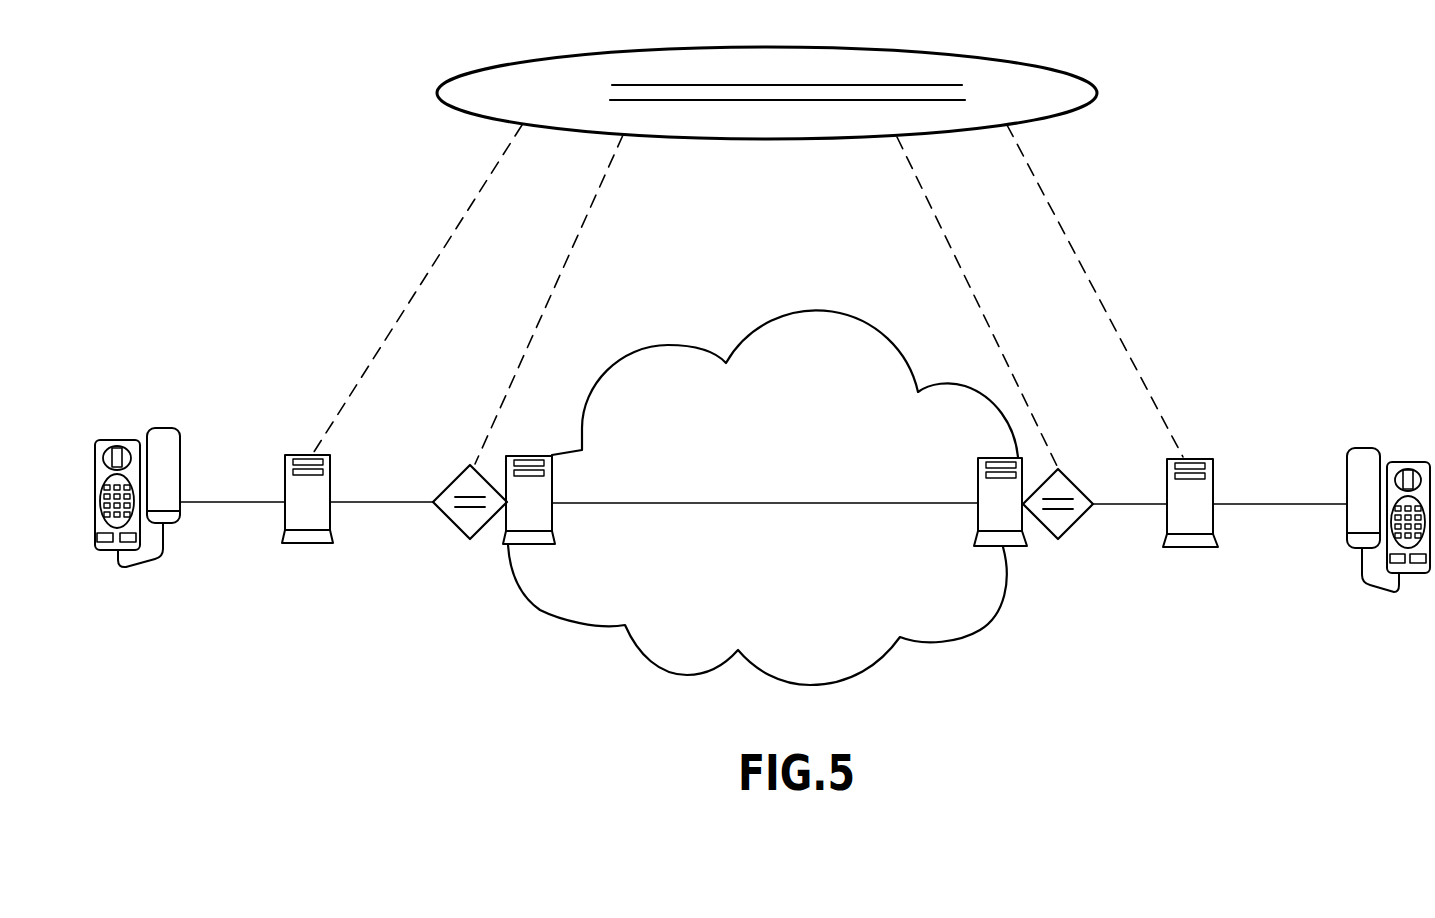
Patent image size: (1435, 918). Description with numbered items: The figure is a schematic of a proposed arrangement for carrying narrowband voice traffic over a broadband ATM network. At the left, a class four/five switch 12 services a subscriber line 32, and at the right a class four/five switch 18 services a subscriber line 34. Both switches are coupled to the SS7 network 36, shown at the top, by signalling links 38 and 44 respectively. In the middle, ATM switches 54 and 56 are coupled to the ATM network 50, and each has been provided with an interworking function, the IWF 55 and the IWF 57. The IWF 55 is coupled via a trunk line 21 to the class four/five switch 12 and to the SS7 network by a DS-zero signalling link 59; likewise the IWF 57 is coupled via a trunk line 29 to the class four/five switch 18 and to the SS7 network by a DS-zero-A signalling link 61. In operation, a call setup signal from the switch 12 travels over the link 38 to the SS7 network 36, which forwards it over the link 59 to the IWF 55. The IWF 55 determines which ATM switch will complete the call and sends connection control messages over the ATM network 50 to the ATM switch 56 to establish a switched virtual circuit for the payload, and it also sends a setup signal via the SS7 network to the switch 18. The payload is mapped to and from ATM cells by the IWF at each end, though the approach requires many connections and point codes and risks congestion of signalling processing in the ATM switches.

The SS7 network 36 is at (860, 48).
The signalling link 38 is at (468, 210).
The DS0 signalling link 59 is at (590, 212).
The DS0A signalling link 61 is at (940, 229).
The signalling link 44 is at (1053, 210).
The subscriber line 32 is at (182, 483).
The class 4/5 switch 12 is at (305, 547).
The trunk line 21 is at (380, 500).
The IWF 55 is at (453, 523).
The ATM switch 54 is at (530, 455).
The ATM network 50 is at (982, 627).
The ATM switch 56 is at (1018, 548).
The IWF 57 is at (1075, 530).
The trunk line 29 is at (1112, 502).
The class 4/5 switch 18 is at (1190, 548).
The subscriber line 34 is at (1345, 523).